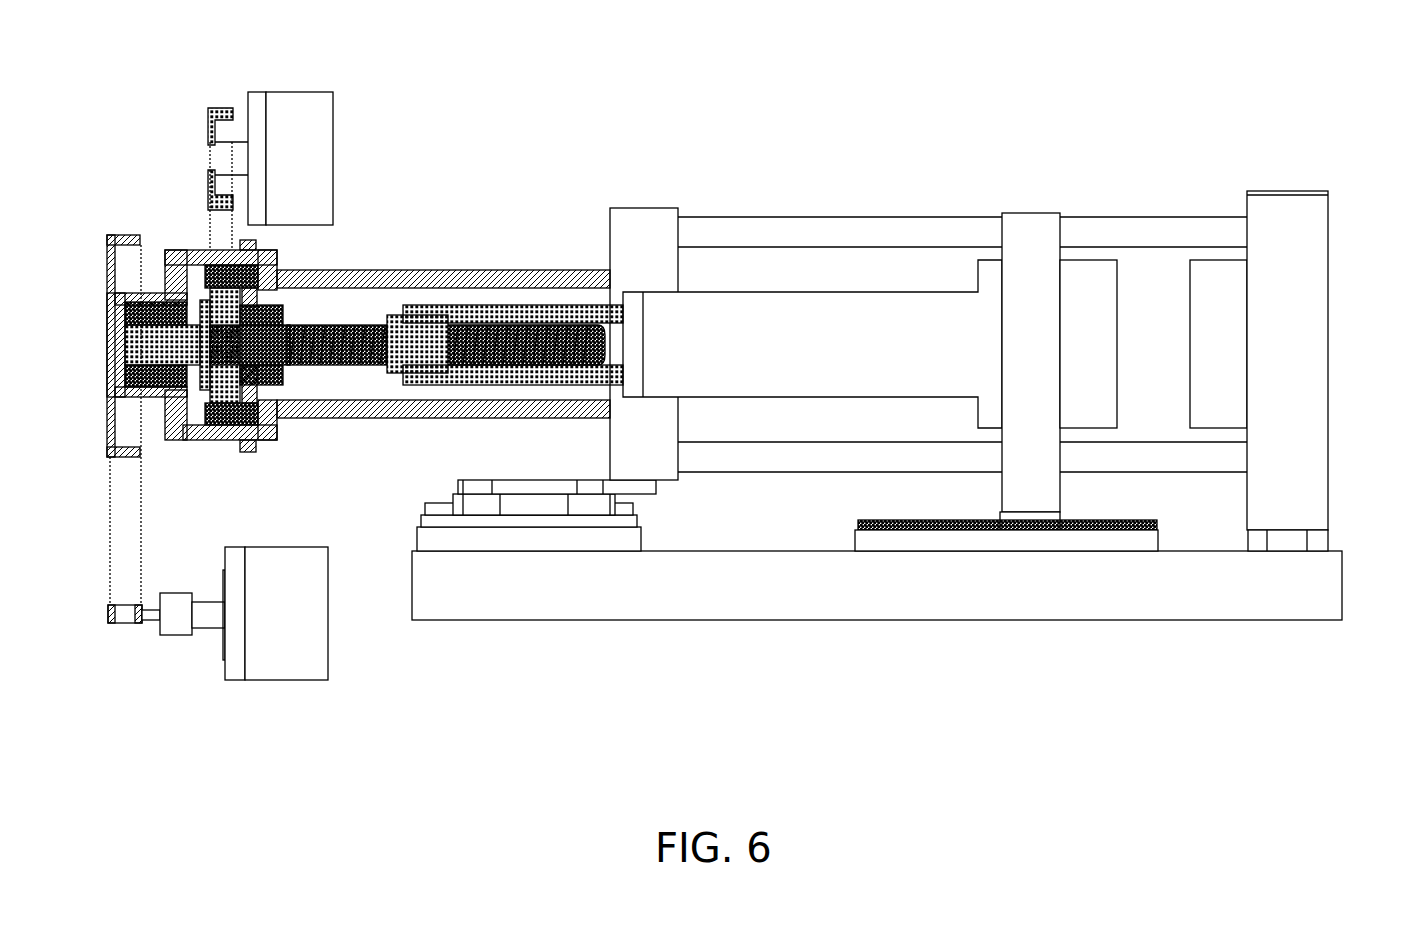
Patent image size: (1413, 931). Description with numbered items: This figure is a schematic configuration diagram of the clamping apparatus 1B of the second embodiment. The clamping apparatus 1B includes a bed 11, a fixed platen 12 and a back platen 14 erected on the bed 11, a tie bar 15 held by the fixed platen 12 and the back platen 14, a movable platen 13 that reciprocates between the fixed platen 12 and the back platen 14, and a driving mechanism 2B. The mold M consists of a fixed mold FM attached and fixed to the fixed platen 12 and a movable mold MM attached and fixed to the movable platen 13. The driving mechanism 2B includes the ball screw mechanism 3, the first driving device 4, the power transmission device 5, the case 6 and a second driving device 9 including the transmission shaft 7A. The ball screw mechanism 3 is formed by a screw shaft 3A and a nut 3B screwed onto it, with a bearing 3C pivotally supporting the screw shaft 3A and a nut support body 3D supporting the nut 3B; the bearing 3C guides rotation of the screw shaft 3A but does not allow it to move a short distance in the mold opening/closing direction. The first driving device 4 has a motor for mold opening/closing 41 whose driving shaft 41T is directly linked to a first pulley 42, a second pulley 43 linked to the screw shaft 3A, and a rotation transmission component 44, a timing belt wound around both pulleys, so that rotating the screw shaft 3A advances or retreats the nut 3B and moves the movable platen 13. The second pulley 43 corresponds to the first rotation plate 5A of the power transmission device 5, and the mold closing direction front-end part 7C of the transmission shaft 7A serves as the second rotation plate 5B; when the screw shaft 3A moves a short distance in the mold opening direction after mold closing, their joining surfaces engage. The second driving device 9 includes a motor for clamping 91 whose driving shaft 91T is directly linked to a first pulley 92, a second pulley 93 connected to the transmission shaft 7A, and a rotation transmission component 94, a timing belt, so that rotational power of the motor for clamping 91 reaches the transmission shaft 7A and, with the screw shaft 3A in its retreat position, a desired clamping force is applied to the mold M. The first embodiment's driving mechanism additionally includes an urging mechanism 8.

The clamping apparatus 1B is at (1150, 138).
The driving mechanism 2B is at (135, 110).
The ball screw mechanism 3 is at (416, 340).
The screw shaft 3A is at (490, 380).
The nut 3B is at (440, 390).
The bearing 3C is at (292, 308).
The nut support body 3D is at (478, 302).
The first driving device 4 is at (241, 171).
The motor for mold opening/closing 41 is at (328, 140).
The driving shaft 41T is at (215, 165).
The first pulley 42 is at (210, 120).
The second pulley 43 is at (200, 275).
The rotation transmission component 44 is at (210, 235).
The power transmission device 5 is at (193, 334).
The first rotation plate 5A is at (163, 331).
The second rotation plate 5B is at (110, 346).
The case 6 is at (240, 440).
The transmission shaft 7A is at (115, 335).
The mold closing direction front-end part 7C is at (125, 292).
The urging mechanism 8 is at (270, 432).
The second driving device 9 is at (232, 657).
The motor for clamping 91 is at (262, 672).
The driving shaft 91T is at (205, 622).
The first pulley 92 is at (108, 612).
The second pulley 93 is at (125, 380).
The rotation transmission component 94 is at (115, 525).
The bed 11 is at (1340, 580).
The fixed platen 12 is at (1320, 282).
The movable platen 13 is at (1040, 218).
The back platen 14 is at (622, 232).
The tie bar 15 is at (843, 218).
The mold M is at (1115, 405).
The movable mold MM is at (1113, 330).
The fixed mold FM is at (1232, 350).